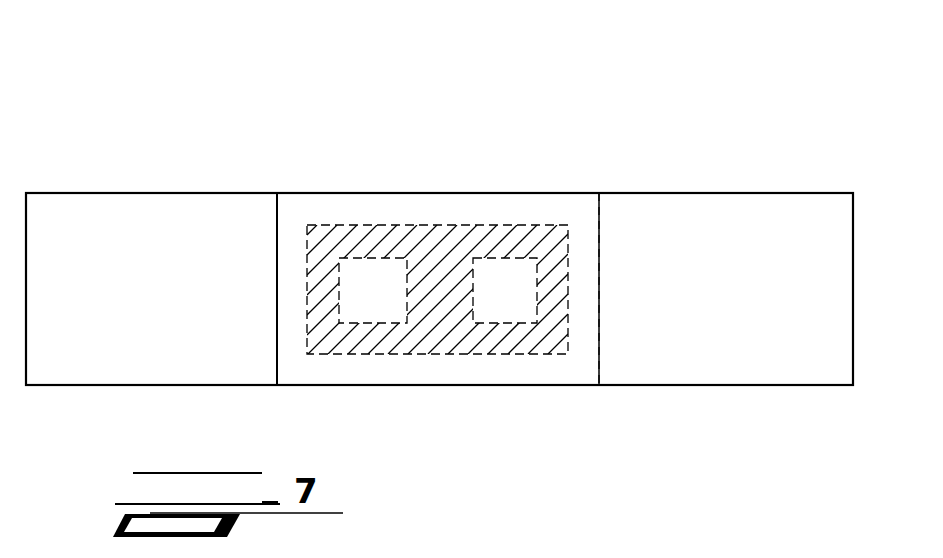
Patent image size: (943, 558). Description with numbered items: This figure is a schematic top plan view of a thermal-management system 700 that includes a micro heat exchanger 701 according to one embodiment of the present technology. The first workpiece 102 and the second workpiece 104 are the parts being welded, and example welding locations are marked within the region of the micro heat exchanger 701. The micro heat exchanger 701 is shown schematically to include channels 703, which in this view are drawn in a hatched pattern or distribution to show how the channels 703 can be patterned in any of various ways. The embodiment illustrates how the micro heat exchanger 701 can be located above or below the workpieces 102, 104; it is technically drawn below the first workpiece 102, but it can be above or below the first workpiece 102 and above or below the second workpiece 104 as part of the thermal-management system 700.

The thermal-management system 700 is at (287, 52).
The second workpiece 104 is at (184, 296).
The first workpiece 102 is at (751, 331).
The micro heat exchanger 701 is at (544, 216).
The channels 703 is at (448, 343).